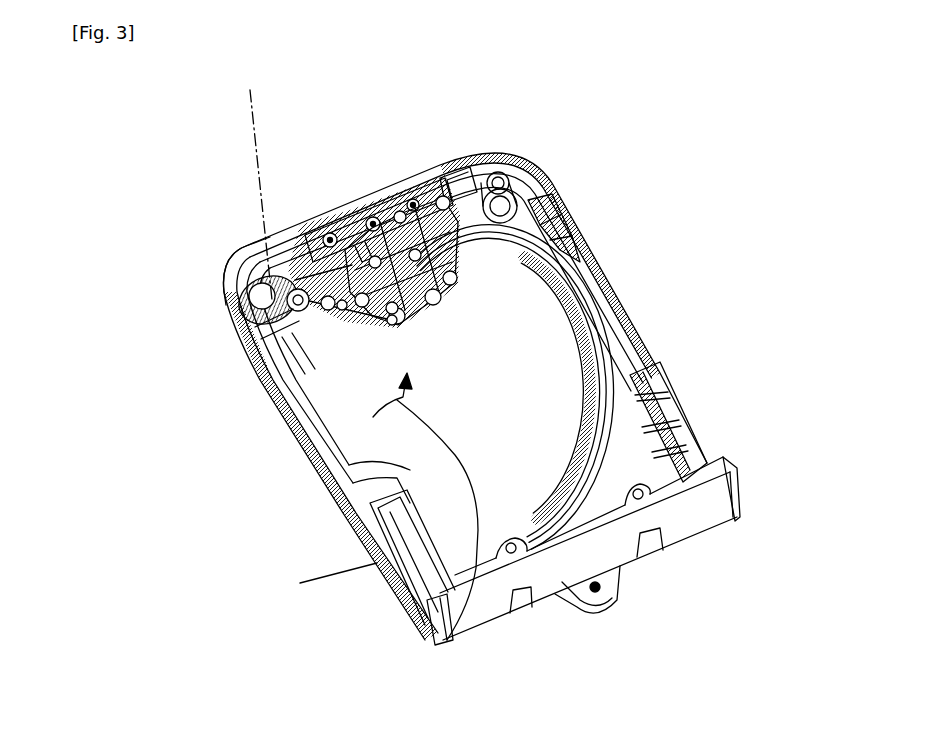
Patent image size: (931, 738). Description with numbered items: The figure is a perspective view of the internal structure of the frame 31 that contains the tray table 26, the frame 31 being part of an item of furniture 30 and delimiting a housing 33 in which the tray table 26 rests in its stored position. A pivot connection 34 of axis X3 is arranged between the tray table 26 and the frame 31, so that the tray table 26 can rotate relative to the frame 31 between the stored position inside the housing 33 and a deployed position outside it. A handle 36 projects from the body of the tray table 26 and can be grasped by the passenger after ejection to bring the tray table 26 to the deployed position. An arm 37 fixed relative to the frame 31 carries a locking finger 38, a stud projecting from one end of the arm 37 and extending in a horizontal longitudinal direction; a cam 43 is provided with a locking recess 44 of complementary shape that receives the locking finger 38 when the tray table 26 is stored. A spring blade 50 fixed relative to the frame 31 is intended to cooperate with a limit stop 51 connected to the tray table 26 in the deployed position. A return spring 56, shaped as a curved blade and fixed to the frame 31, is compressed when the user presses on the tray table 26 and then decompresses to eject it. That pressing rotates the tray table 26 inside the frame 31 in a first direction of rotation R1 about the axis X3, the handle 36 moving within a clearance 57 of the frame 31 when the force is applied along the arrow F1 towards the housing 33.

The item of furniture 30 is at (590, 155).
The housing 33 is at (587, 333).
The return spring 56 is at (578, 248).
The tray table 26 is at (660, 372).
The frame 31 is at (700, 517).
The handle 36 is at (398, 577).
The locking recess 44 is at (300, 255).
The spring blade 50 is at (310, 238).
The limit stop 51 is at (222, 276).
The locking finger 38 is at (233, 345).
The cam 43 is at (247, 354).
The arm 37 is at (282, 387).
The pivot connection 34 is at (248, 248).
The axis X3 is at (260, 130).
The arrow F1 is at (370, 553).
The clearance 57 is at (447, 640).
The first direction of rotation R1 is at (477, 583).